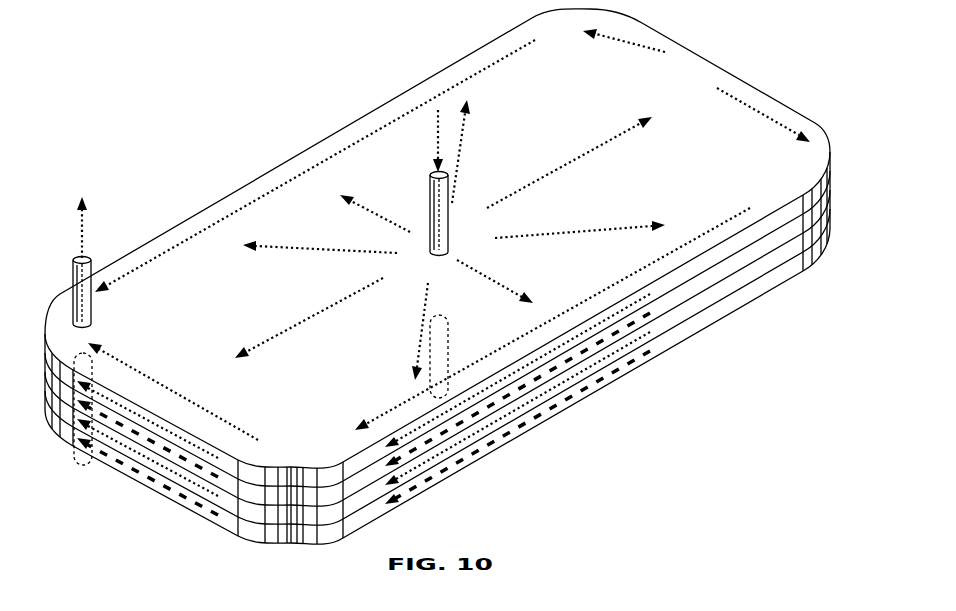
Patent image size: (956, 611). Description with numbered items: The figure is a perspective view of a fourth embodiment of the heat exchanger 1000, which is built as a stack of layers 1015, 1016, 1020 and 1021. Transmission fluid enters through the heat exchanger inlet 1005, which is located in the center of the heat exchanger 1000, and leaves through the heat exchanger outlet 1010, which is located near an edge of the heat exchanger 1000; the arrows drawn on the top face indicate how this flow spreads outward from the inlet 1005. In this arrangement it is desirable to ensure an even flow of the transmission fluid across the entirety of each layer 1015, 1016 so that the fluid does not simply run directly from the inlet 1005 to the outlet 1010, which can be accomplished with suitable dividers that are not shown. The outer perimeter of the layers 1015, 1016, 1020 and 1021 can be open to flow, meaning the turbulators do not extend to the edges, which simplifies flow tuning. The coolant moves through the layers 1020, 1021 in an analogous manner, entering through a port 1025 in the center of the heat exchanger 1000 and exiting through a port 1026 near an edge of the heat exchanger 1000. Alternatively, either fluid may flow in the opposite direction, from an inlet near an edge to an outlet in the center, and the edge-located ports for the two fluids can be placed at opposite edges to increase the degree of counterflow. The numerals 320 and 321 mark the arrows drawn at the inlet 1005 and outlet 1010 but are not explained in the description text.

The heat exchanger 1000 is at (737, 65).
The heat exchanger inlet 1005 is at (430, 205).
The applied force arrow on central pin 320 is at (436, 122).
The heat exchanger outlet 1010 is at (92, 312).
The applied force arrow on edge pin 321 is at (84, 228).
The layer 1015 is at (652, 293).
The layer 1020 is at (698, 283).
The layer 1016 is at (753, 273).
The layer 1021 is at (798, 263).
The port 1025 is at (430, 345).
The port 1026 is at (78, 467).